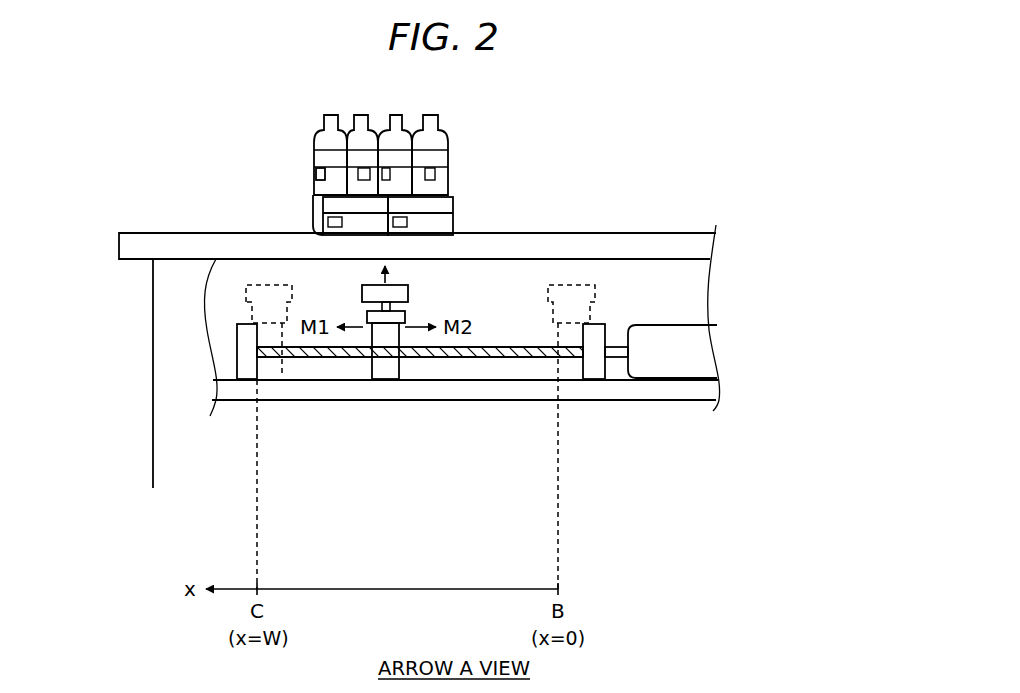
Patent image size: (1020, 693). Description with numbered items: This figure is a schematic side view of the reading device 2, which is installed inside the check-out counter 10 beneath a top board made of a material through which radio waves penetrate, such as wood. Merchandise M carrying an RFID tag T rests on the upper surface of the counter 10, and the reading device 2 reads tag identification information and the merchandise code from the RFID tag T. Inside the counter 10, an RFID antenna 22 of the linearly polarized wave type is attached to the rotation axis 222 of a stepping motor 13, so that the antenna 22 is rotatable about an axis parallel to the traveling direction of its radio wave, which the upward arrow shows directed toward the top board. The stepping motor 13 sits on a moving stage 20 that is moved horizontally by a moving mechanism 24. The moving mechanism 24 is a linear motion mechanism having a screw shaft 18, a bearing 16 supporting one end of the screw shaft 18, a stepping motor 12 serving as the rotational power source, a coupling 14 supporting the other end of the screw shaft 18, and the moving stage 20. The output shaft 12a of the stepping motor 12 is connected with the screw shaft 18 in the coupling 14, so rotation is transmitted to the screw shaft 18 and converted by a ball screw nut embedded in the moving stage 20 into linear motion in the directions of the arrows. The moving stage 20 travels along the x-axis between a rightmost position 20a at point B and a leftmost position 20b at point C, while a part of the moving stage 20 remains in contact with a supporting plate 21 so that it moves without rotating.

The reading device 2 is at (206, 388).
The check-out counter 10 is at (150, 233).
The stepping motor 12 is at (678, 326).
The output shaft 12a is at (617, 344).
The stepping motor 13 is at (325, 222).
The coupling 14 is at (605, 370).
The bearing 16 is at (257, 372).
The screw shaft 18 is at (517, 358).
The moving stage 20 is at (400, 370).
The rightmost position 20a is at (597, 293).
The leftmost position 20b is at (252, 318).
The supporting plate 21 is at (678, 400).
The RFID antenna 22 is at (393, 287).
The rotation axis 222 is at (390, 307).
The moving mechanism 24 is at (460, 363).
The merchandise M is at (450, 128).
The RFID tag T is at (316, 173).